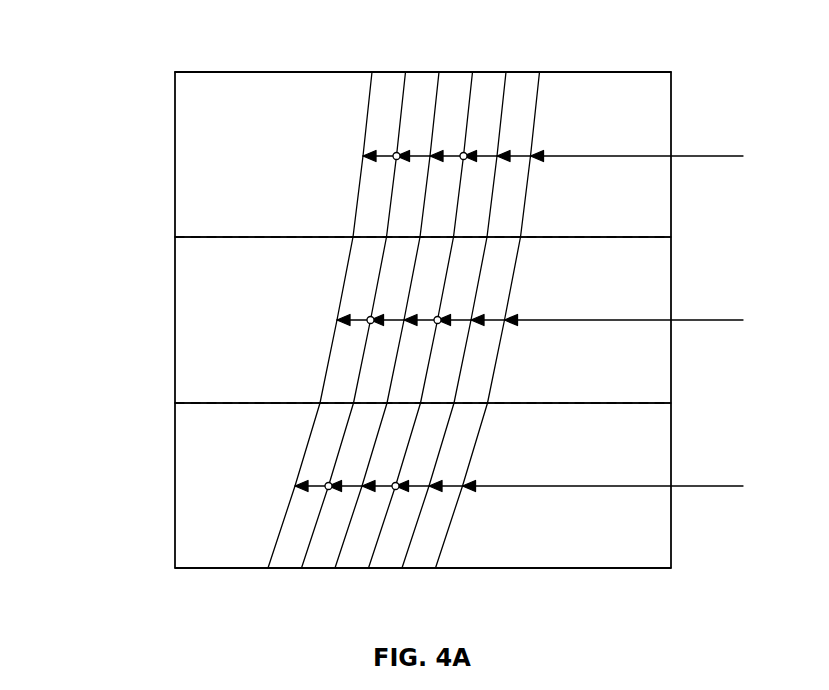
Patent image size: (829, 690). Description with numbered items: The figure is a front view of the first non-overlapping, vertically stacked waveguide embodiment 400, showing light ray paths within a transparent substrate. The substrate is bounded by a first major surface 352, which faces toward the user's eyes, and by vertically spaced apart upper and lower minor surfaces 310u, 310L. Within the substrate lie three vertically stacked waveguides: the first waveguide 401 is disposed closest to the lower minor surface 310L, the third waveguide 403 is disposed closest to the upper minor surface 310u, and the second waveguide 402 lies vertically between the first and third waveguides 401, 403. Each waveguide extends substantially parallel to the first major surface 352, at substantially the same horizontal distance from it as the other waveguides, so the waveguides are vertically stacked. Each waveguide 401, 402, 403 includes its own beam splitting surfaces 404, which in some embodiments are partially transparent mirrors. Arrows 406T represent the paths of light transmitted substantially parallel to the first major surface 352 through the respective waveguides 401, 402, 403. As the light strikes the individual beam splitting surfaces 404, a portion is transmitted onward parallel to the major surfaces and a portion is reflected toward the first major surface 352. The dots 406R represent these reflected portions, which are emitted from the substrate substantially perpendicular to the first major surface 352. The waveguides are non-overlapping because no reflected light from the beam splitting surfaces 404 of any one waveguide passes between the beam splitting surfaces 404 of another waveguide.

The first non-overlapping, vertically stacked WG embodiment 400 is at (133, 36).
The first major surface 352 is at (217, 97).
The upper minor surface 310u is at (282, 72).
The lower minor surface 310L is at (197, 568).
The third waveguide 403 is at (204, 149).
The second waveguide 402 is at (204, 338).
The first waveguide 401 is at (204, 454).
The beam splitting surfaces 404 is at (400, 85).
The arrows representing transmitted light paths 406T is at (578, 156).
The dots representing reflected light 406R is at (502, 131).